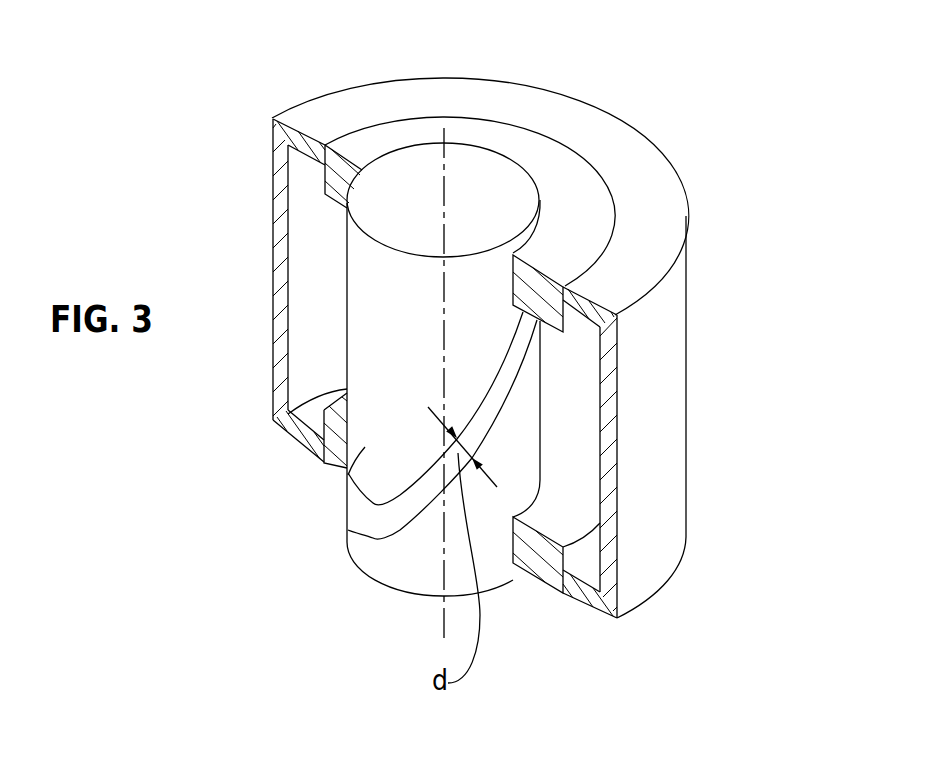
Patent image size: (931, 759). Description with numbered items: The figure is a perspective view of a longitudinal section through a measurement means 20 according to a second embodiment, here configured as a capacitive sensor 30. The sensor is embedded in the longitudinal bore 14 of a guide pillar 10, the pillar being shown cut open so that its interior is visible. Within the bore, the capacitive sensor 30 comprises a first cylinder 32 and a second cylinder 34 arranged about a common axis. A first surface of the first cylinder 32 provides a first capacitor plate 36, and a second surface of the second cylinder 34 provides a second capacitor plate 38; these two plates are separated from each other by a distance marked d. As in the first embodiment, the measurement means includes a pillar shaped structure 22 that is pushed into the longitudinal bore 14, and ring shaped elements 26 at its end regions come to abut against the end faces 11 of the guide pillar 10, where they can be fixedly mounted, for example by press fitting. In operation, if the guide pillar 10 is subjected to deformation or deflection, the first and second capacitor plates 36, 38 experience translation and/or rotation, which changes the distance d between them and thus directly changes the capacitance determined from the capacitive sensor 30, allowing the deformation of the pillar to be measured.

The guide pillar 10 is at (687, 219).
The end faces 11 is at (331, 105).
The longitudinal bore 14 is at (310, 357).
The measurement means 20 is at (636, 73).
The pillar shaped structure 22 is at (493, 181).
The ring shaped elements 26 is at (540, 567).
The capacitive sensor 30 is at (222, 229).
The first cylinder 32 is at (348, 472).
The second cylinder 34 is at (412, 585).
The first capacitor plate 36 is at (342, 513).
The second capacitor plate 38 is at (348, 533).